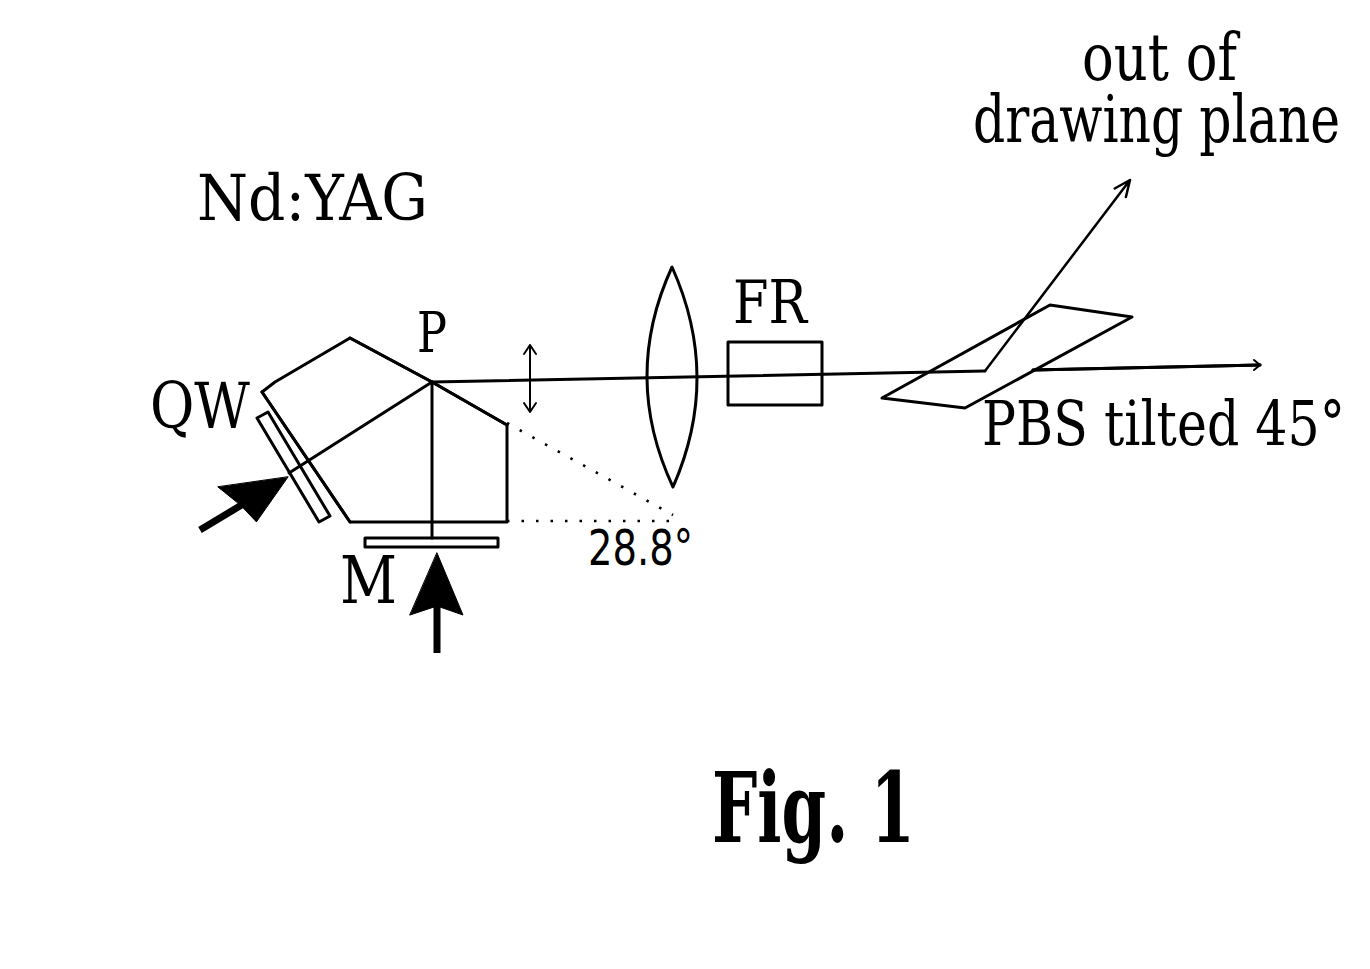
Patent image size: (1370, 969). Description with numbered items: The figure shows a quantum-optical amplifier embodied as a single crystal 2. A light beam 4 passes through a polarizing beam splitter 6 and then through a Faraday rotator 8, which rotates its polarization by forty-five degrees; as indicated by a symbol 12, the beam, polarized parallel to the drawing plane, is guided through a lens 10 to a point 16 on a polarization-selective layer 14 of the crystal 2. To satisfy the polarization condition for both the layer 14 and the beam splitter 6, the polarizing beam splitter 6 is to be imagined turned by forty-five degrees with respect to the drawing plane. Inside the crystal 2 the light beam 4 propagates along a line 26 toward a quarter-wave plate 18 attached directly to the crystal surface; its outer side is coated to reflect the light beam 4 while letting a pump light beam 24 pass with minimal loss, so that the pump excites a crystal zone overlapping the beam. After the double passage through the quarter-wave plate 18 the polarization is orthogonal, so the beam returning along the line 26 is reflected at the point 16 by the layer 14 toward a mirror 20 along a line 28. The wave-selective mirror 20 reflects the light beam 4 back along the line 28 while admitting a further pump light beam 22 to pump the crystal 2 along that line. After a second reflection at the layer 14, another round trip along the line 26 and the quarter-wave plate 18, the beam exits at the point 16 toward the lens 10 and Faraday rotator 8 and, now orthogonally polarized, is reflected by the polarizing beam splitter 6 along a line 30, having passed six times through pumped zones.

The crystal 2 is at (335, 376).
The light beam 4 is at (1180, 365).
The polarizing beam splitter 6 is at (1065, 332).
The Faraday rotator 8 is at (800, 362).
The lens 10 is at (665, 308).
The symbol 12 is at (534, 343).
The polarization-selective layer 14 is at (350, 338).
The point 16 is at (433, 382).
The quarter-wave plate 18 is at (328, 522).
The mirror 20 is at (467, 543).
The further pump light beam 22 is at (441, 632).
The pump light beam 24 is at (203, 530).
The line 26 is at (320, 450).
The line 28 is at (433, 487).
The line 30 is at (1103, 213).